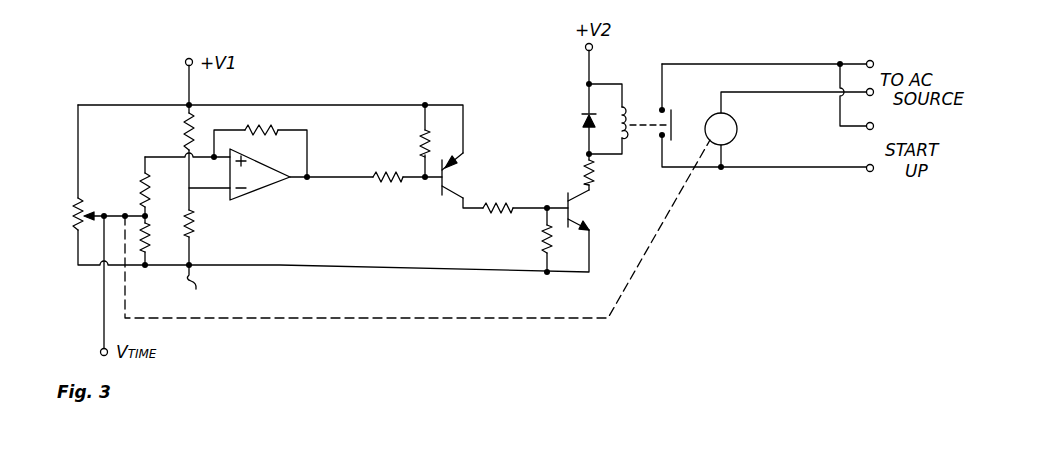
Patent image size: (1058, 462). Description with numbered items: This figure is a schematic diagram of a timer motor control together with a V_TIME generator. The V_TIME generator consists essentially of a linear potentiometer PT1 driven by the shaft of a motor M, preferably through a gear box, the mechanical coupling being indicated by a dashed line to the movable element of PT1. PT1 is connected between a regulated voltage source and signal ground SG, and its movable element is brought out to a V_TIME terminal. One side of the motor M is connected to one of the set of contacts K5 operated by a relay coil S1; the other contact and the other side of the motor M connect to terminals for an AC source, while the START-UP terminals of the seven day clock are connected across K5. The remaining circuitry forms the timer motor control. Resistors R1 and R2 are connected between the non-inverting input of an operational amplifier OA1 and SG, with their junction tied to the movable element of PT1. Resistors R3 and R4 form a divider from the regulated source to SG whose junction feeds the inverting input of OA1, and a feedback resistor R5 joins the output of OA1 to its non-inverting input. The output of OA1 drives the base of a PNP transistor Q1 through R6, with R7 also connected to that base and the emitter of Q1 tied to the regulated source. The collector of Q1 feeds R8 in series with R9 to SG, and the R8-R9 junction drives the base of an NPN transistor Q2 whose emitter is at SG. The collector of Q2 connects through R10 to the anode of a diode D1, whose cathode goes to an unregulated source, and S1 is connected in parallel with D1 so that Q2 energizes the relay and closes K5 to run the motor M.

The resistor R1 is at (158, 190).
The resistor R2 is at (158, 237).
The resistor R3 is at (176, 131).
The resistor R4 is at (203, 223).
The resistor R5 is at (272, 119).
The resistor R6 is at (389, 189).
The resistor R7 is at (413, 142).
The resistor R8 is at (500, 196).
The resistor R9 is at (532, 239).
The resistor R10 is at (608, 172).
The linear potentiometer PT1 is at (66, 214).
The operational amplifier OA1 is at (250, 195).
The PNP transistor Q1 is at (467, 175).
The NPN transistor Q2 is at (588, 210).
The diode D1 is at (575, 124).
The relay coil S1 is at (626, 106).
The set of contacts K5 is at (686, 121).
The motor M is at (721, 129).
The signal ground SG is at (202, 287).